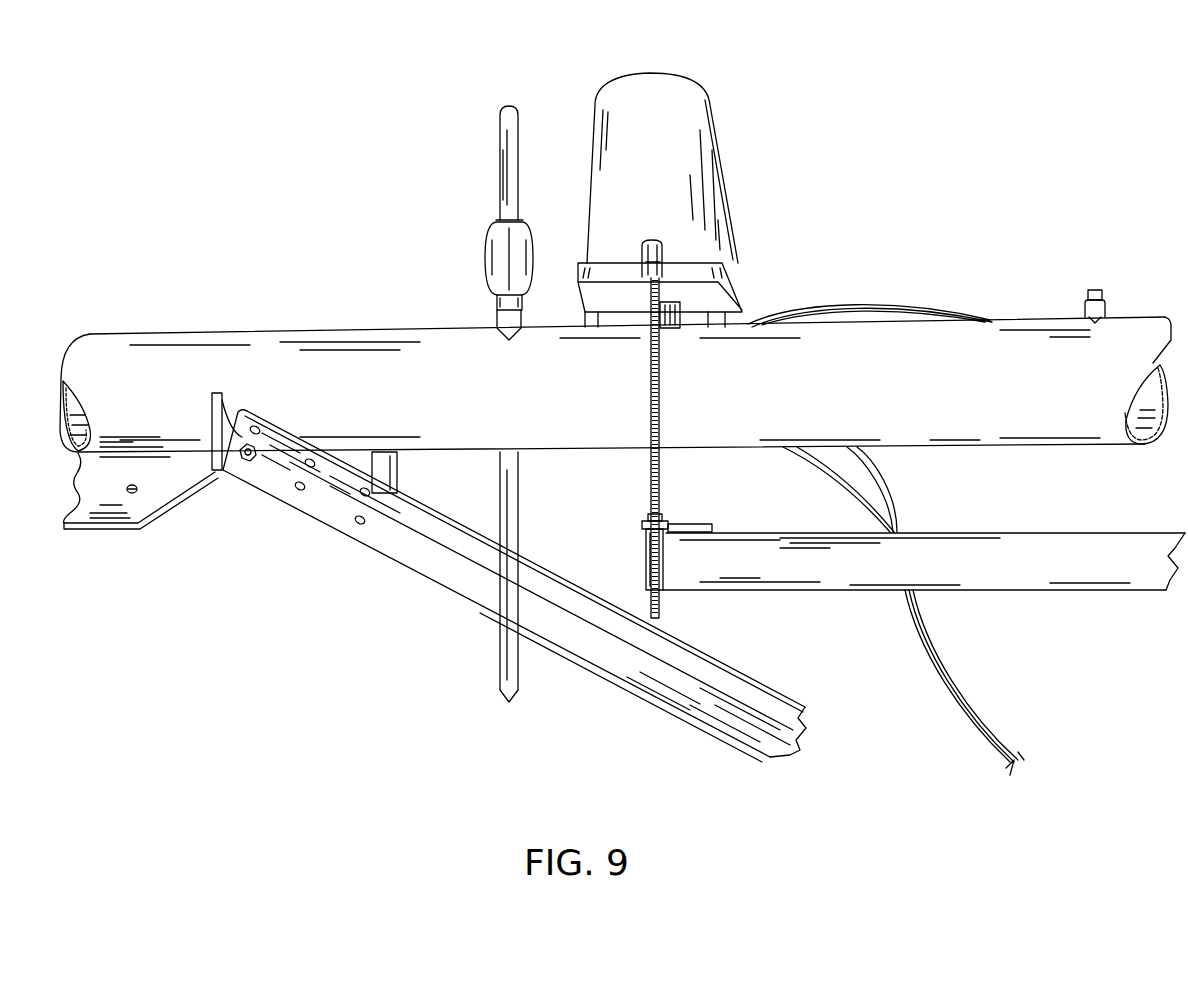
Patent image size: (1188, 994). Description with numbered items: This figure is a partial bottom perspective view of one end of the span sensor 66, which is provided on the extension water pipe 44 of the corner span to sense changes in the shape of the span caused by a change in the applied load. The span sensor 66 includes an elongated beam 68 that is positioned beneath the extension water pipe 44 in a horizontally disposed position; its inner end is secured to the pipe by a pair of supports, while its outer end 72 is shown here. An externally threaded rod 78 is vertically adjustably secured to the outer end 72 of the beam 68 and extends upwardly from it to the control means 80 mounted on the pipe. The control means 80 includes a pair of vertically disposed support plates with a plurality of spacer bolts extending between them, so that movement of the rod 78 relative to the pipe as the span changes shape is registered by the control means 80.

The extension water pipe 44 is at (960, 340).
The span sensor 66 is at (1111, 610).
The elongated beam 68 is at (857, 577).
The outer end 72 is at (645, 570).
The externally threaded rod 78 is at (660, 405).
The control means 80 is at (722, 112).